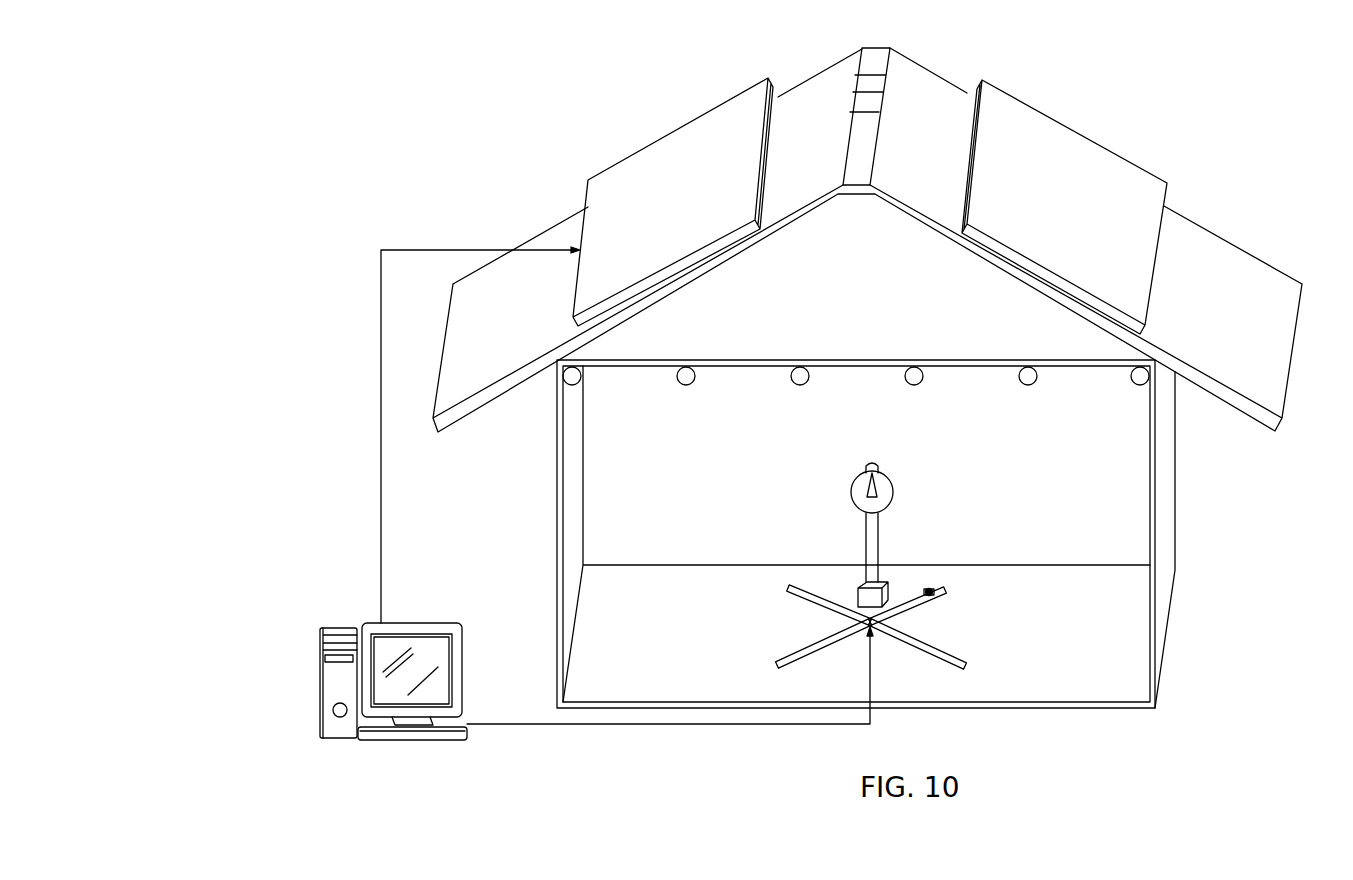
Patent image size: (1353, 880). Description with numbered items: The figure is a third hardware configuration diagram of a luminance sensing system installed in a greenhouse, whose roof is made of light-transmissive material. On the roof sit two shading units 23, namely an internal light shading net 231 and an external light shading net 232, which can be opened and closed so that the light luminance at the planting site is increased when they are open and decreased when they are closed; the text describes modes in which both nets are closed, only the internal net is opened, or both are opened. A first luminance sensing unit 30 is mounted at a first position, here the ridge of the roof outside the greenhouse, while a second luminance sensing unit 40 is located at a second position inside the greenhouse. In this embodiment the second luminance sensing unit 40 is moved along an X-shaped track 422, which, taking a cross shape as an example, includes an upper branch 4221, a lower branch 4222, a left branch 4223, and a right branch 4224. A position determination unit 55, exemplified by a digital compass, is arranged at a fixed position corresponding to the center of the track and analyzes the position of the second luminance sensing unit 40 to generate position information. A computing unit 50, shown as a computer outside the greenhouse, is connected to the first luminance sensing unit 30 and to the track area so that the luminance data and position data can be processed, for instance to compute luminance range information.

The shading unit 23 is at (638, 140).
The internal light shading net 231 is at (1138, 335).
The external light shading net 232 is at (1133, 308).
The first luminance sensing unit 30 is at (883, 84).
The second luminance sensing unit 40 is at (928, 592).
The computing unit 50 is at (333, 645).
The position determination unit 55 is at (888, 487).
The X-shaped track 422 is at (864, 600).
The upper branch 4221 is at (788, 587).
The lower branch 4222 is at (965, 668).
The left branch 4223 is at (776, 667).
The right branch 4224 is at (947, 588).